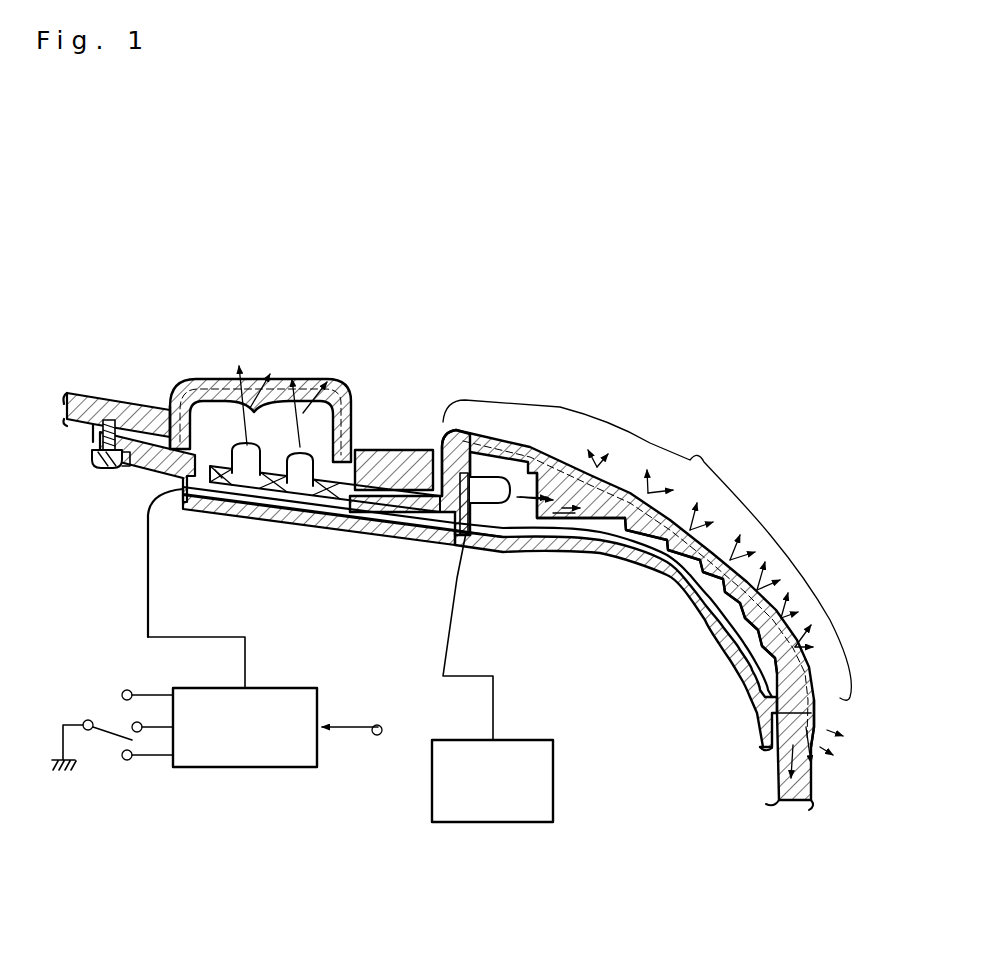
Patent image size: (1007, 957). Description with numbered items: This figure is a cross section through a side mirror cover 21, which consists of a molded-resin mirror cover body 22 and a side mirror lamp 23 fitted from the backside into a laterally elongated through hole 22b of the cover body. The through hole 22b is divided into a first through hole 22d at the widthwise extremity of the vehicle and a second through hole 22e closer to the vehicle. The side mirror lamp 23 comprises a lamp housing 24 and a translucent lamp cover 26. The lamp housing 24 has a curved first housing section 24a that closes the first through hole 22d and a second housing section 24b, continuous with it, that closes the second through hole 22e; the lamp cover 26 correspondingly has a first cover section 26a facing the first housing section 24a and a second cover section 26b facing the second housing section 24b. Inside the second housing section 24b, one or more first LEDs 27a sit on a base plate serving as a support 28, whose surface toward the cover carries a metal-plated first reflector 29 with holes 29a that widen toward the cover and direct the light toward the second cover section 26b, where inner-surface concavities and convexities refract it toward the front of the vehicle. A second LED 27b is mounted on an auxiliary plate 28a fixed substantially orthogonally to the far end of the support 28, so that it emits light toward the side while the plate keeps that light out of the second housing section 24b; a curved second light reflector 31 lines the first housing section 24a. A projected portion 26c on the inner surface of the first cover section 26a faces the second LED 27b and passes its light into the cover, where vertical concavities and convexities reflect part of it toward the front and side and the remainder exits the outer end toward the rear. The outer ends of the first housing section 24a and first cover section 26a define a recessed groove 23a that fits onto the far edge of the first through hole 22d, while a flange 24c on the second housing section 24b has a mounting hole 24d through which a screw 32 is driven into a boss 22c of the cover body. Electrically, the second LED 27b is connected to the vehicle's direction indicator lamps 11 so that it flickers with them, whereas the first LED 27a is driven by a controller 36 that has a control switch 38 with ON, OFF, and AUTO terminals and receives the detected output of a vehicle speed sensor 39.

The direction indicator lamps 11 is at (493, 822).
The side mirror cover 21 is at (212, 217).
The mirror cover body 22 is at (120, 398).
The through hole 22b is at (411, 385).
The boss 22c is at (92, 435).
The first through hole 22d is at (442, 440).
The second through hole 22e is at (352, 432).
The side mirror lamp 23 is at (553, 365).
The recessed groove 23a is at (770, 775).
The lamp housing 24 is at (480, 624).
The first housing section 24a is at (613, 642).
The second housing section 24b is at (183, 525).
The flange 24c is at (106, 440).
The mounting hole 24d is at (129, 468).
The lamp cover 26 is at (600, 588).
The first cover section 26a is at (704, 458).
The second cover section 26b is at (213, 327).
The projected portion 26c is at (536, 445).
The first LED 27a is at (290, 452).
The second LED 27b is at (492, 490).
The support 28 is at (385, 517).
The auxiliary plate 28a is at (473, 514).
The first reflector 29 is at (183, 498).
The holes 29a is at (247, 478).
The second light reflector 31 is at (763, 597).
The screw 32 is at (117, 470).
The controller 36 is at (232, 768).
The control switch 38 is at (89, 720).
The vehicle speed sensor 39 is at (379, 726).